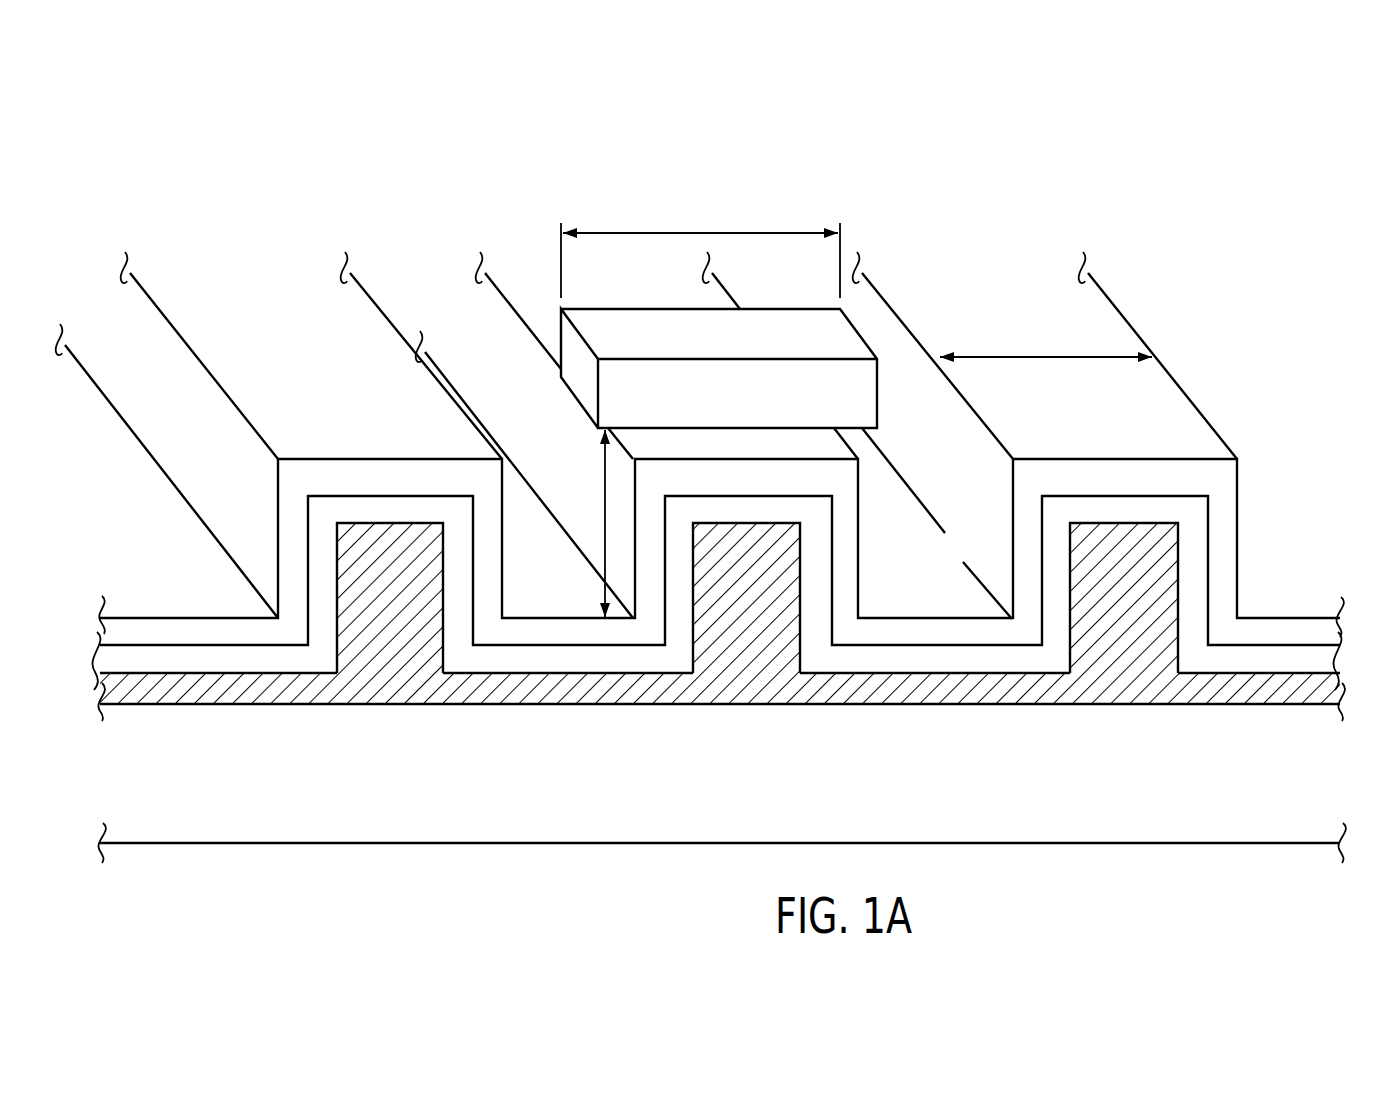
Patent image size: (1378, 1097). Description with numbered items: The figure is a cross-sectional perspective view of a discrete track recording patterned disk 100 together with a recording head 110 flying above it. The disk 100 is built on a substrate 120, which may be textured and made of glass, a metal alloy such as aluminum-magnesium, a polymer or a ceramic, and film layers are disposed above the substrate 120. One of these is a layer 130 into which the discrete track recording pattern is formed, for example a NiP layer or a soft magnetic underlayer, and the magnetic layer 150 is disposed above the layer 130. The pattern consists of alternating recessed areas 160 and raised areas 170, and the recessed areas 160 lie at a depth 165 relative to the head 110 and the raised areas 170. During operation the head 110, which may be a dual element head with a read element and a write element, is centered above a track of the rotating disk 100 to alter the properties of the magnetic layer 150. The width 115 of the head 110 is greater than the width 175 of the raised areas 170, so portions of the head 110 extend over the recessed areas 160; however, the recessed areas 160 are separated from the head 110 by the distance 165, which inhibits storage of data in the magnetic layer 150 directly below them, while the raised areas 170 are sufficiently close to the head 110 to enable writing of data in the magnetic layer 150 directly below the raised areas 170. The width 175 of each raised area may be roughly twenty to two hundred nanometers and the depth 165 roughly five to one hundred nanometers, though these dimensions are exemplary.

The disk 100 is at (1032, 142).
The read-write head 110 is at (790, 410).
The width of the head 115 is at (624, 231).
The substrate 120 is at (867, 797).
The layer into which the DTR pattern is formed 130 is at (1130, 599).
The magnetic layer 150 is at (530, 660).
The recessed areas 160 is at (191, 613).
The depth of the recessed areas 165 is at (603, 465).
The raised areas 170 is at (1121, 442).
The width of the raised areas 175 is at (1007, 354).